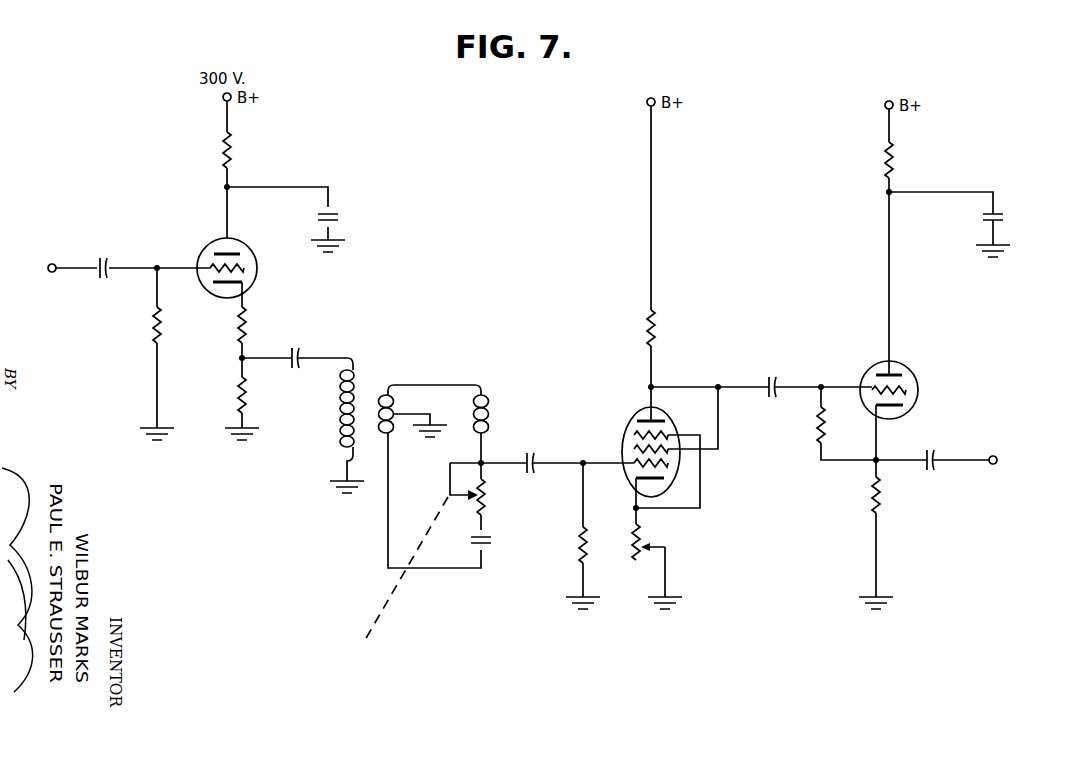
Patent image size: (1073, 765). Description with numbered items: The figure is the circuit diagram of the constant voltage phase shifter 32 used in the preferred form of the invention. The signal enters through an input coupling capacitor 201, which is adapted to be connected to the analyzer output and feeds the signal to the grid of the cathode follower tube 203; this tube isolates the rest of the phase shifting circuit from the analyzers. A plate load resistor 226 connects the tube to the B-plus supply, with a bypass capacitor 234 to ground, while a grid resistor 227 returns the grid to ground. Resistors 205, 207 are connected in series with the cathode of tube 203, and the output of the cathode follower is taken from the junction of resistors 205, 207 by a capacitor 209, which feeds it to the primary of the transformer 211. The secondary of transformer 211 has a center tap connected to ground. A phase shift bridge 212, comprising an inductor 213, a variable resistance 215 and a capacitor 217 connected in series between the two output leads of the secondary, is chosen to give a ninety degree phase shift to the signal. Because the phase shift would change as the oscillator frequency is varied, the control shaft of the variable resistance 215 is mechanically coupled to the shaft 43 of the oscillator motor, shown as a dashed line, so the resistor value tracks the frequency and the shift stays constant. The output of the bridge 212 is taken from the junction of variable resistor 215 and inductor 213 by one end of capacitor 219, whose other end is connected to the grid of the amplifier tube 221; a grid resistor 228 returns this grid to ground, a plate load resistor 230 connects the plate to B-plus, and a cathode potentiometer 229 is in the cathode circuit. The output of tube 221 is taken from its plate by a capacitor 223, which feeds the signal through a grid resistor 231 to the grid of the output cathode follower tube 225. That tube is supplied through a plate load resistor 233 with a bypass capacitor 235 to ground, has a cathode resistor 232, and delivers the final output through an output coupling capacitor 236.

The phase shifter 32 is at (131, 164).
The shaft 43 is at (387, 598).
The input coupling capacitor 201 is at (105, 259).
The cathode follower tube 203 is at (257, 277).
The resistor 205 is at (247, 325).
The resistor 207 is at (237, 392).
The capacitor 209 is at (298, 353).
The transformer 211 is at (369, 395).
The phase shift bridge 212 is at (421, 461).
The inductor 213 is at (491, 405).
The variable resistance 215 is at (487, 503).
The capacitor 217 is at (491, 541).
The capacitor 219 is at (532, 457).
The amplifier tube 221 is at (634, 408).
The capacitor 223 is at (774, 381).
The output cathode follower tube 225 is at (917, 385).
The plate load resistor 226 is at (232, 149).
The grid resistor 227 is at (153, 325).
The grid resistor 228 is at (580, 560).
The cathode potentiometer 229 is at (644, 542).
The plate load resistor 230 is at (657, 332).
The grid resistor 231 is at (816, 425).
The cathode resistor 232 is at (882, 497).
The plate load resistor 233 is at (895, 160).
The bypass capacitor 234 is at (336, 217).
The bypass capacitor 235 is at (1003, 219).
The output coupling capacitor 236 is at (933, 455).